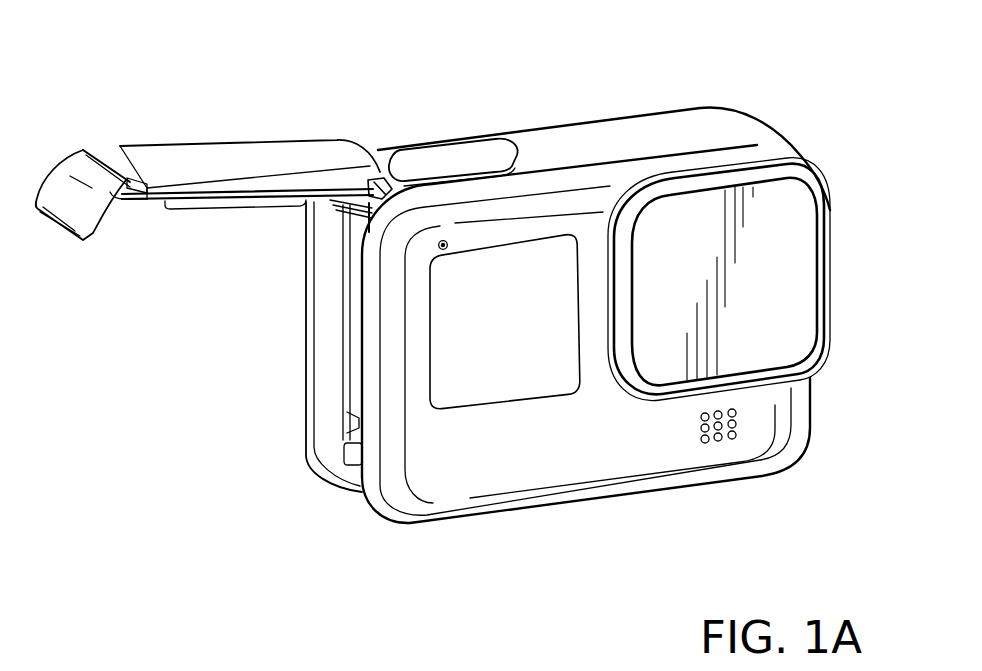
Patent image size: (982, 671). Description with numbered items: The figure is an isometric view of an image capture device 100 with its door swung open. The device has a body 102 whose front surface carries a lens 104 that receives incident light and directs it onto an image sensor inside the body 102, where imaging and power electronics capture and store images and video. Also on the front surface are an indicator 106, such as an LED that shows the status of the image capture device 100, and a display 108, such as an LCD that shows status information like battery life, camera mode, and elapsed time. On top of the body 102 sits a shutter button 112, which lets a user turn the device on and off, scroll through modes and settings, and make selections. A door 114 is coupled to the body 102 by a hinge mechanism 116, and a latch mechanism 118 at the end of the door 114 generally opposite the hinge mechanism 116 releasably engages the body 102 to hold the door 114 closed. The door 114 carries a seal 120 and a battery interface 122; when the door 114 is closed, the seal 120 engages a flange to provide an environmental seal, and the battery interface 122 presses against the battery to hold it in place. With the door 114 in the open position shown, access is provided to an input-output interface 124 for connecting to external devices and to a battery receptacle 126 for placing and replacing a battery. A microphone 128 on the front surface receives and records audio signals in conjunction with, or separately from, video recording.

The image capture device 100 is at (792, 45).
The body 102 is at (625, 127).
The lens 104 is at (788, 280).
The indicator 106 is at (439, 245).
The display 108 is at (514, 398).
The shutter button 112 is at (407, 157).
The door 114 is at (258, 152).
The hinge mechanism 116 is at (381, 176).
The latch mechanism 118 is at (62, 185).
The seal 120 is at (150, 204).
The battery interface 122 is at (205, 209).
The input-output (I/O) interface 124 is at (357, 453).
The battery receptacle 126 is at (346, 229).
The microphone 128 is at (718, 441).